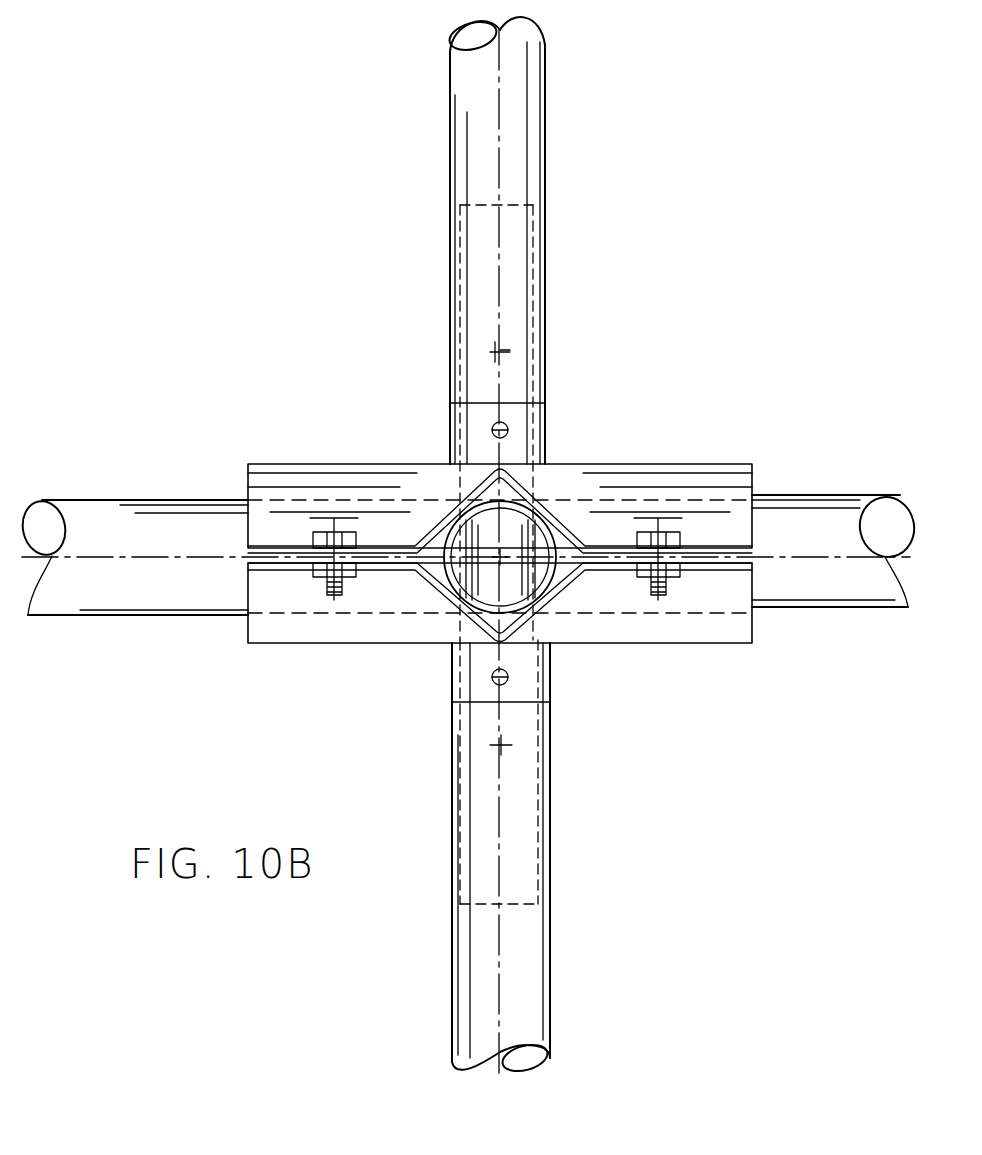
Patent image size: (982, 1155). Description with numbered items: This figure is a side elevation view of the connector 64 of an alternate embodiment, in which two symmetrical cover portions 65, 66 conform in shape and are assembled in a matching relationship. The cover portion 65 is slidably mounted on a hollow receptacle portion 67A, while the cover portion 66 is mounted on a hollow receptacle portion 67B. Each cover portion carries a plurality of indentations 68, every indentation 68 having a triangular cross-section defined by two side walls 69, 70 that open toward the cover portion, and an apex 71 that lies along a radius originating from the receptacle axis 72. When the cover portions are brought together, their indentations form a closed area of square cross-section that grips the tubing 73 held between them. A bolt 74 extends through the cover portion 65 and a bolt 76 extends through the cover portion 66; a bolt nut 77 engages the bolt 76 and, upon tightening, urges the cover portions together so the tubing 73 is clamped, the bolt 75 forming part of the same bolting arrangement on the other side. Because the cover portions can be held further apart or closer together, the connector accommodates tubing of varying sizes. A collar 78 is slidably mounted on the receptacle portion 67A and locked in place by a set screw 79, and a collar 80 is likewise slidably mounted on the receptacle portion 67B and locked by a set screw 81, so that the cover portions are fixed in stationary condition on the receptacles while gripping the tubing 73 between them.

The connector 64 is at (604, 306).
The cover portion 65 is at (690, 464).
The cover portion 66 is at (690, 643).
The hollow receptacle portion 67A is at (546, 250).
The hollow receptacle portion 67B is at (548, 780).
The indentation 68 is at (248, 487).
The side wall 69 is at (598, 467).
The side wall 70 is at (450, 510).
The apex 71 is at (506, 468).
The receptacle axis 72 is at (498, 192).
The tubing 73 is at (805, 495).
The bolt 74 is at (649, 590).
The bolt 75 is at (667, 578).
The bolt 76 is at (342, 585).
The bolt nut 77 is at (326, 573).
The collar 78 is at (450, 422).
The set screw 79 is at (506, 432).
The collar 80 is at (453, 670).
The set screw 81 is at (508, 677).